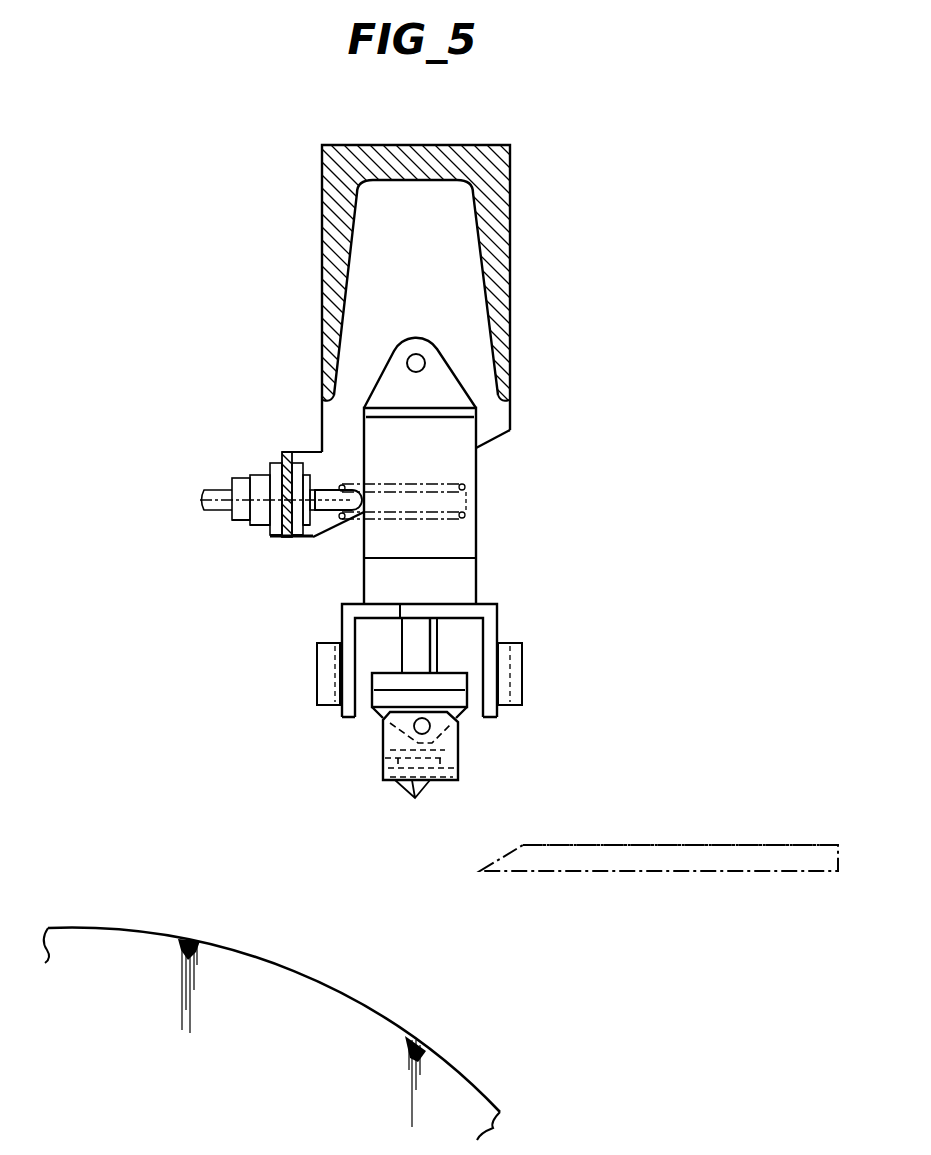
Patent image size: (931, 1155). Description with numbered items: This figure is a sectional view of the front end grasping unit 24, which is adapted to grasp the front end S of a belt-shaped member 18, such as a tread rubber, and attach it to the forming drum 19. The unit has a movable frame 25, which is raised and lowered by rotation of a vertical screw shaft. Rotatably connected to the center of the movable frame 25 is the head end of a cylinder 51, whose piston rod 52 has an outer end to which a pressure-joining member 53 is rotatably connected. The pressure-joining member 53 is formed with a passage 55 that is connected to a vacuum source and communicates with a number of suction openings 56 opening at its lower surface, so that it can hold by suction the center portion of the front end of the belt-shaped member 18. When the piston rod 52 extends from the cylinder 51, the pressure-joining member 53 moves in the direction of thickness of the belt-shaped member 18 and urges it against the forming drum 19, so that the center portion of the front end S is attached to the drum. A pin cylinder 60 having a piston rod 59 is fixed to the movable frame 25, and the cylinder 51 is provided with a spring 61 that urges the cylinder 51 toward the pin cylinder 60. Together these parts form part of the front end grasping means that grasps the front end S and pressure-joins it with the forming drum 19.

The front end grasping unit 24 is at (312, 403).
The movable frame 25 is at (502, 420).
The pin cylinder 60 is at (262, 478).
The piston rod 59 is at (330, 512).
The spring 61 is at (466, 512).
The cylinder 51 is at (477, 556).
The piston rod 52 is at (428, 640).
The pressure-joining member 53 is at (462, 740).
The passage 55 is at (393, 750).
The suction openings 56 is at (412, 805).
The front end S is at (530, 845).
The belt-shaped member 18 is at (722, 845).
The forming drum 19 is at (381, 1012).